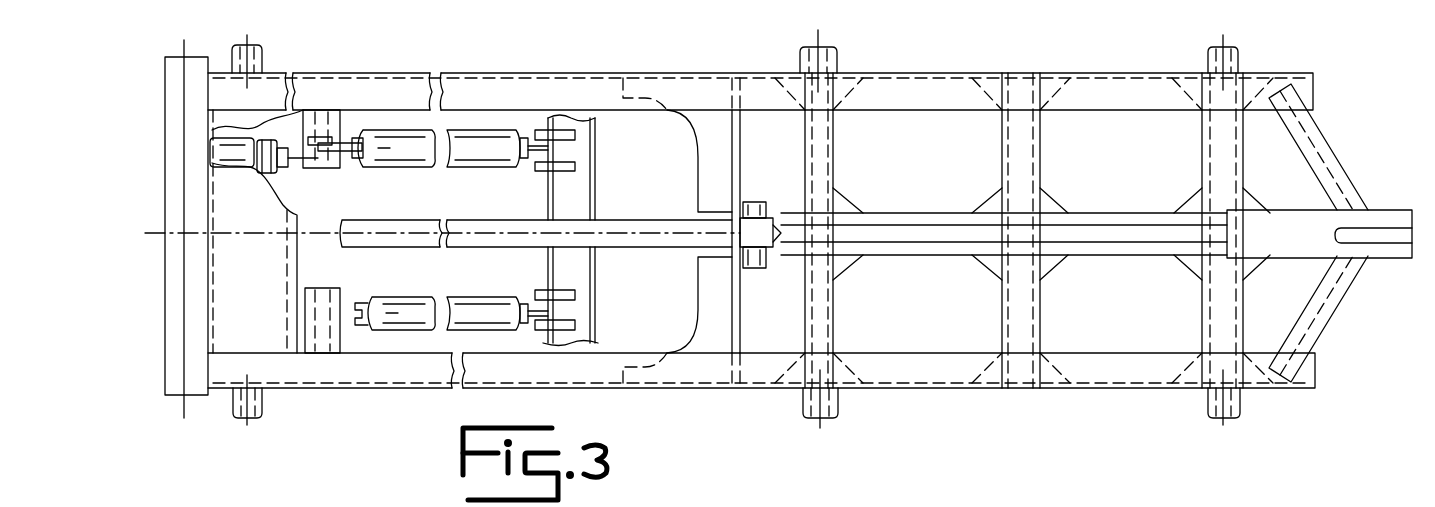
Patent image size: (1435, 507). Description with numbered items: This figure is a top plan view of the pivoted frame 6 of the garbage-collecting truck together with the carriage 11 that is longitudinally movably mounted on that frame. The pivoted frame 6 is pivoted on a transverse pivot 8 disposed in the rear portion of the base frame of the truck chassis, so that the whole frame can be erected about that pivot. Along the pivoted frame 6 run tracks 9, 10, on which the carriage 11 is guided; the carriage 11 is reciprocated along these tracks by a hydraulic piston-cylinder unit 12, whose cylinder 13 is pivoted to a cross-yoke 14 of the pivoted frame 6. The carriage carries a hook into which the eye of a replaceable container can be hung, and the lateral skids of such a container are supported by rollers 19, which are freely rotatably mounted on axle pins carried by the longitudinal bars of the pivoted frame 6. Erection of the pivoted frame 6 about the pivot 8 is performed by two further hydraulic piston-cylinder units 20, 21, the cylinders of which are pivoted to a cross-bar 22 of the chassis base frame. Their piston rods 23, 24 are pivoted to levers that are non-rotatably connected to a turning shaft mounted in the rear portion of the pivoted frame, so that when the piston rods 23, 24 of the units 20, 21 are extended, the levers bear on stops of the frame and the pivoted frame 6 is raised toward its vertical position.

The pivoted frame 6 is at (958, 370).
The transverse pivot 8 is at (197, 302).
The track 9 is at (893, 215).
The track 10 is at (882, 252).
The carriage 11 is at (1300, 215).
The hydraulic piston-cylinder unit 12 is at (697, 233).
The cylinder 13 is at (673, 230).
The cross-yoke 14 is at (740, 320).
The rollers 19 is at (263, 56).
The hydraulic piston-cylinder unit 20 is at (490, 160).
The hydraulic piston-cylinder unit 21 is at (467, 300).
The cross-bar 22 is at (583, 148).
The piston rod 23 is at (343, 160).
The piston rod 24 is at (357, 302).